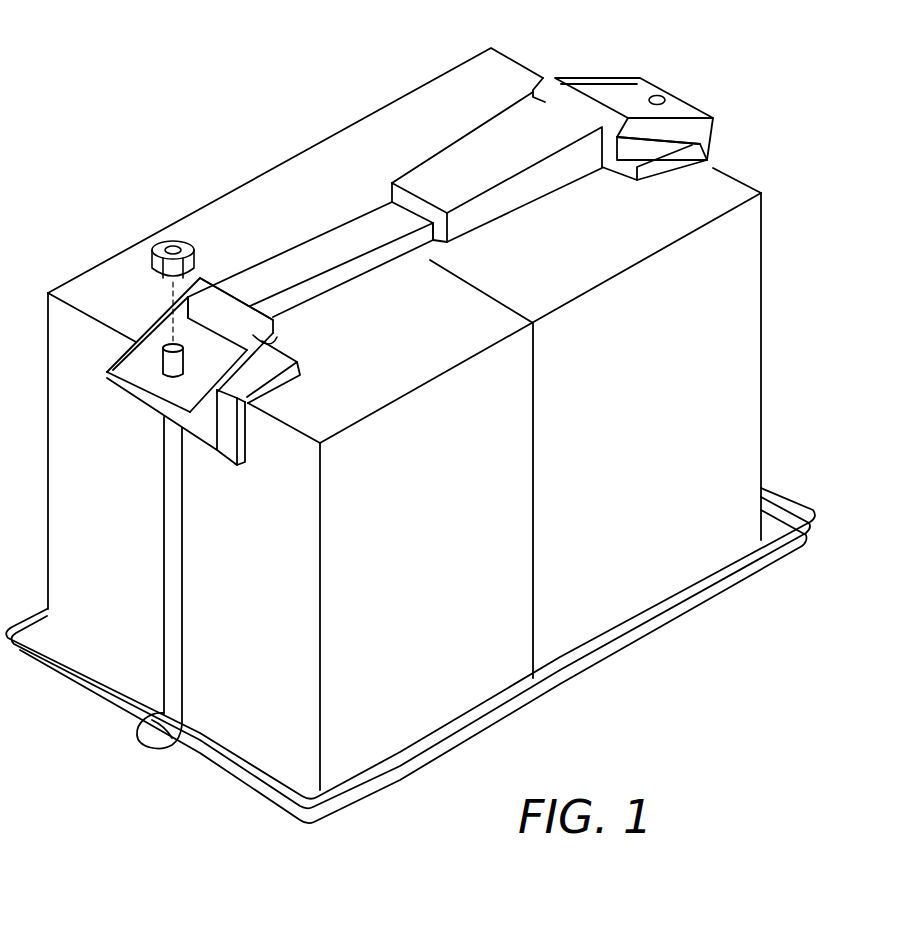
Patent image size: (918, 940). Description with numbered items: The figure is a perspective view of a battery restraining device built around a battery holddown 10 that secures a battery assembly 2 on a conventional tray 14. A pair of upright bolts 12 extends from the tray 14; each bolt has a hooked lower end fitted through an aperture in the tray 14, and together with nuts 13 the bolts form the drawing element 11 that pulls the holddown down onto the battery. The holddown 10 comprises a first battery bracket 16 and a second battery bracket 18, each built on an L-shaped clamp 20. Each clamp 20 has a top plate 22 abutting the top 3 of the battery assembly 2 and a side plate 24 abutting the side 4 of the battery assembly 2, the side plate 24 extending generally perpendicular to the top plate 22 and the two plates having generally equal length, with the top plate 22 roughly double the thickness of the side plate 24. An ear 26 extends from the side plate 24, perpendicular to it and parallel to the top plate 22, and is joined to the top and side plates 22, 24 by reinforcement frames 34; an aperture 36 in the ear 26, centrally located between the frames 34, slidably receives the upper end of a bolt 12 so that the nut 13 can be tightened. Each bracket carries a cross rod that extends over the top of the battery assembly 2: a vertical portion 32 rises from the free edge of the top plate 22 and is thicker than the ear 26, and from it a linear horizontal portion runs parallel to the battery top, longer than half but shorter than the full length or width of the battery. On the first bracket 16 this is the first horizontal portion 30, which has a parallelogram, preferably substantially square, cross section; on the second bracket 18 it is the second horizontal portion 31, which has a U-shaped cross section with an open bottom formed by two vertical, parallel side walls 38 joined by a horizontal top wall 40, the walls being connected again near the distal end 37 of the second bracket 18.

The battery holddown 10 is at (301, 122).
The drawing element 11 is at (152, 465).
The battery assembly 2 is at (478, 413).
The top of battery assembly 3 is at (625, 240).
The side of battery assembly 4 is at (288, 525).
The upright bolts 12 is at (148, 718).
The nuts 13 is at (163, 247).
The tray 14 is at (238, 775).
The first battery bracket 16 is at (295, 258).
The second battery bracket 18 is at (468, 155).
The L-shaped clamp 20 is at (287, 358).
The top plate 22 is at (279, 380).
The side plate 24 is at (243, 433).
The ear 26 is at (172, 414).
The first horizontal portion 30 is at (340, 247).
The second horizontal portion 31 is at (502, 147).
The vertical portion 32 is at (197, 296).
The reinforcement frames 34 is at (270, 325).
The aperture 36 is at (656, 97).
The distal end 37 is at (336, 241).
The side walls 38 is at (457, 238).
The top wall 40 is at (397, 183).